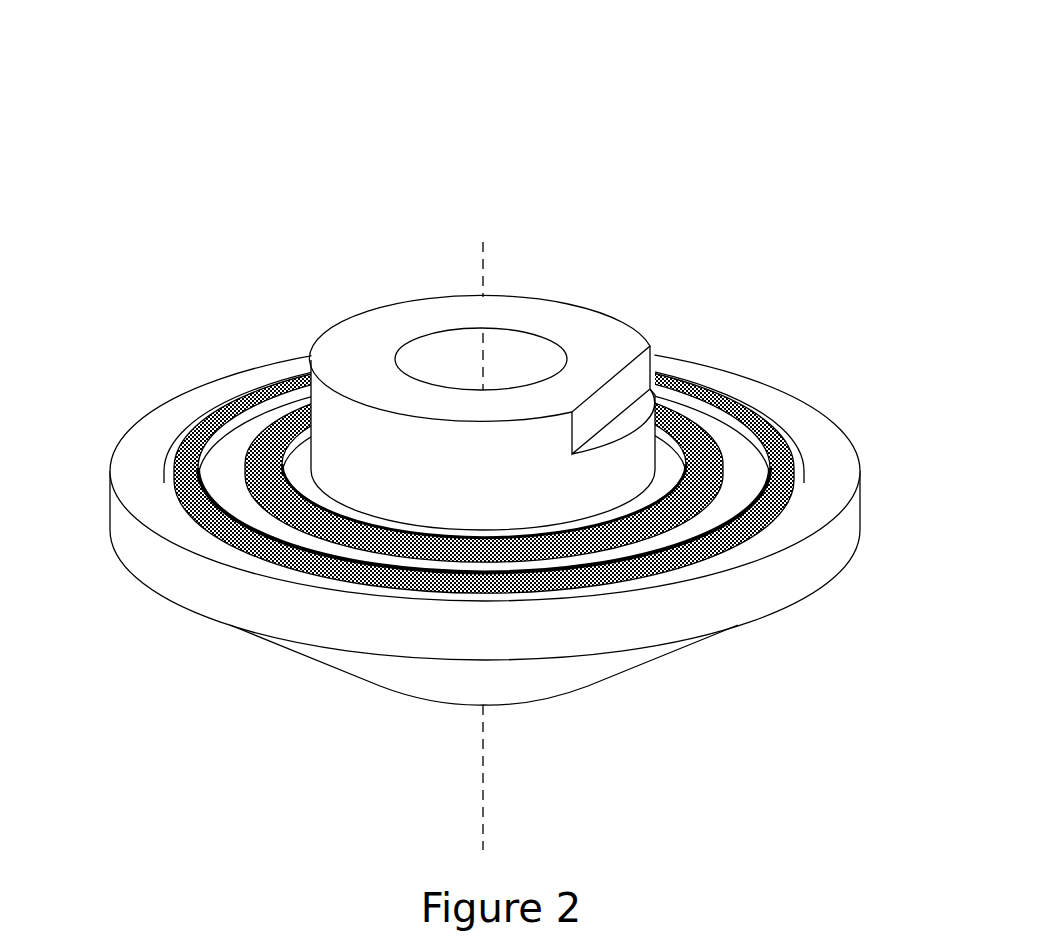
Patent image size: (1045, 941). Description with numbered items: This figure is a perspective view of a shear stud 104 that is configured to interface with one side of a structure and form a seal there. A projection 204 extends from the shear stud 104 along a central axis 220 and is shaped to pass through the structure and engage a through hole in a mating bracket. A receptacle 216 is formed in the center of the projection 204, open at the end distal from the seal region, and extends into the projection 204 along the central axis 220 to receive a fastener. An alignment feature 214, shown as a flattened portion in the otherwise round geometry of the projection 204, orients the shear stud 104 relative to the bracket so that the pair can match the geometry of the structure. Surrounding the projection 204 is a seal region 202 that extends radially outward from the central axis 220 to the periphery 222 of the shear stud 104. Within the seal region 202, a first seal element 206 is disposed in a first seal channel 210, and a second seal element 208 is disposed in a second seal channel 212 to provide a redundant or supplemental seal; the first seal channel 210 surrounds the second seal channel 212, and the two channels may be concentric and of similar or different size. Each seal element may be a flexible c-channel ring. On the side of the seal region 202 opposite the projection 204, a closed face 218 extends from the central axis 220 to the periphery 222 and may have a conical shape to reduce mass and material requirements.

The shear stud 104 is at (176, 88).
The seal region 202 is at (132, 440).
The projection 204 is at (457, 364).
The first seal element 206 is at (767, 432).
The second seal element 208 is at (673, 427).
The first seal channel 210 is at (807, 498).
The second seal channel 212 is at (733, 478).
The alignment feature 214 is at (626, 383).
The receptacle 216 is at (396, 362).
The closed face 218 is at (623, 678).
The central axis 220 is at (481, 277).
The periphery 222 is at (135, 540).